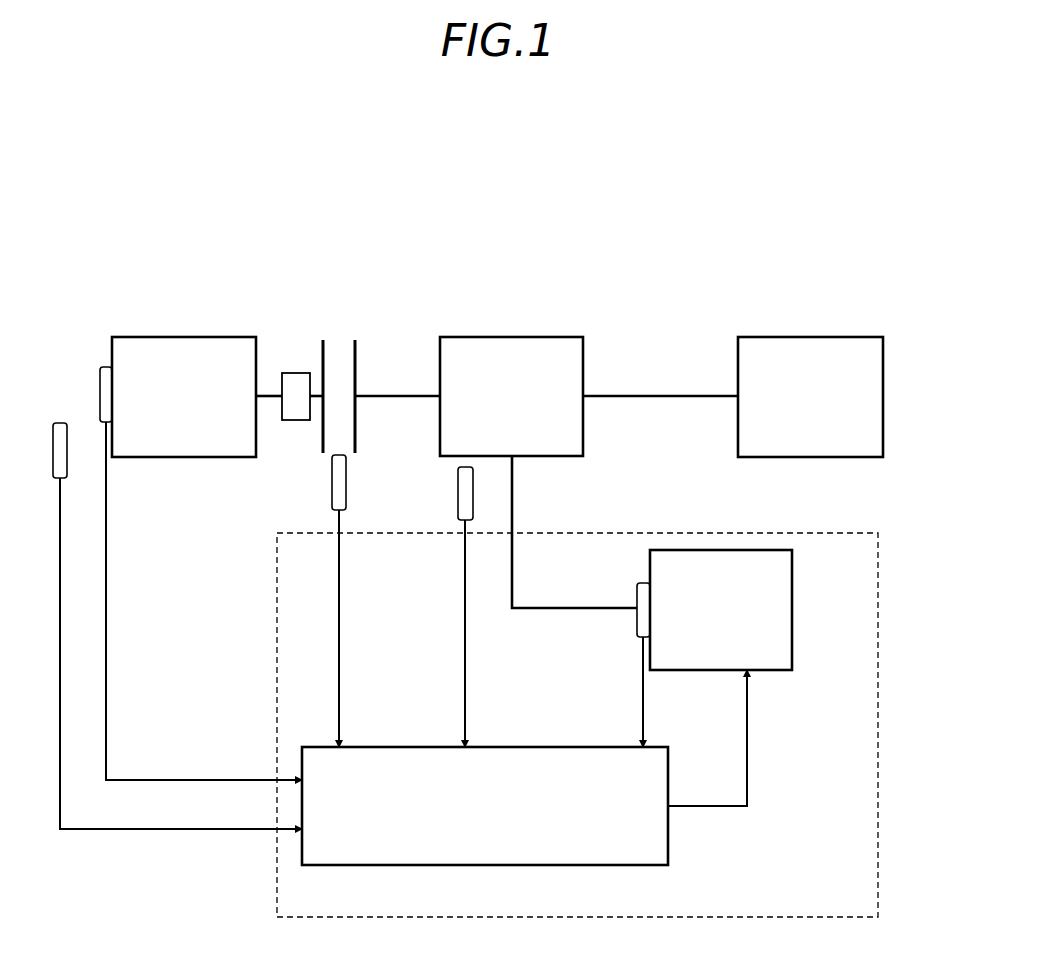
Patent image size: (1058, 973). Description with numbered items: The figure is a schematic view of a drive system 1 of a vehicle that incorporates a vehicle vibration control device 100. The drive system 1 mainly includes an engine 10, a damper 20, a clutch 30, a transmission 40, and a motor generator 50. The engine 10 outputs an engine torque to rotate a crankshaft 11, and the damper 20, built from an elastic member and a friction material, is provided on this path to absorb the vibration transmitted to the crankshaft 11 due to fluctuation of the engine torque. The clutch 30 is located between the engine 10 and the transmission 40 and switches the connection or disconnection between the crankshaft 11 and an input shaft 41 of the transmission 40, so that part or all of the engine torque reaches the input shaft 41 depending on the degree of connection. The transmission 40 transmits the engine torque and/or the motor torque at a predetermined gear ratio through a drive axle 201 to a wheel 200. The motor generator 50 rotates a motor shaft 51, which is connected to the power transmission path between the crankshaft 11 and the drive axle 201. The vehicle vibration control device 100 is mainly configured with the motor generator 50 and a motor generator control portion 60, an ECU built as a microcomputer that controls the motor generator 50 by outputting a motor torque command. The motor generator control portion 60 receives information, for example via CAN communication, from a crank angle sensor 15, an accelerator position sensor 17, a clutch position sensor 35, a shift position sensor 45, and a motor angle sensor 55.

The drive system 1 is at (887, 278).
The engine 10 is at (130, 337).
The crankshaft 11 is at (275, 398).
The crank angle sensor 15 is at (107, 367).
The accelerator position sensor 17 is at (58, 422).
The damper 20 is at (291, 373).
The clutch 30 is at (343, 338).
The clutch position sensor 35 is at (332, 506).
The transmission 40 is at (500, 337).
The input shaft 41 is at (403, 398).
The shift position sensor 45 is at (458, 498).
The motor generator 50 is at (793, 608).
The motor shaft 51 is at (514, 576).
The motor angle sensor 55 is at (641, 582).
The motor generator control portion 60 is at (377, 865).
The vehicle vibration control device 100 is at (852, 843).
The wheel 200 is at (800, 334).
The drive axle 201 is at (648, 395).